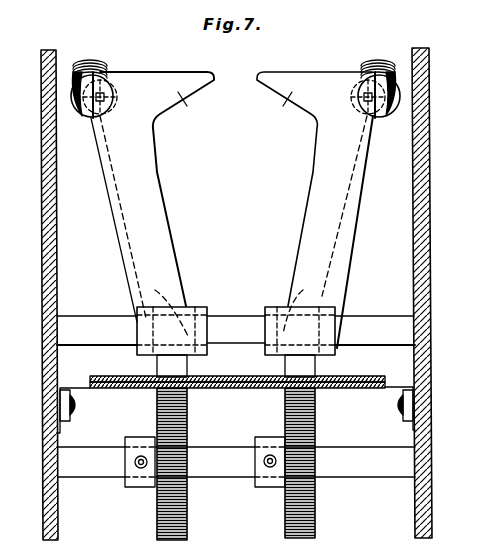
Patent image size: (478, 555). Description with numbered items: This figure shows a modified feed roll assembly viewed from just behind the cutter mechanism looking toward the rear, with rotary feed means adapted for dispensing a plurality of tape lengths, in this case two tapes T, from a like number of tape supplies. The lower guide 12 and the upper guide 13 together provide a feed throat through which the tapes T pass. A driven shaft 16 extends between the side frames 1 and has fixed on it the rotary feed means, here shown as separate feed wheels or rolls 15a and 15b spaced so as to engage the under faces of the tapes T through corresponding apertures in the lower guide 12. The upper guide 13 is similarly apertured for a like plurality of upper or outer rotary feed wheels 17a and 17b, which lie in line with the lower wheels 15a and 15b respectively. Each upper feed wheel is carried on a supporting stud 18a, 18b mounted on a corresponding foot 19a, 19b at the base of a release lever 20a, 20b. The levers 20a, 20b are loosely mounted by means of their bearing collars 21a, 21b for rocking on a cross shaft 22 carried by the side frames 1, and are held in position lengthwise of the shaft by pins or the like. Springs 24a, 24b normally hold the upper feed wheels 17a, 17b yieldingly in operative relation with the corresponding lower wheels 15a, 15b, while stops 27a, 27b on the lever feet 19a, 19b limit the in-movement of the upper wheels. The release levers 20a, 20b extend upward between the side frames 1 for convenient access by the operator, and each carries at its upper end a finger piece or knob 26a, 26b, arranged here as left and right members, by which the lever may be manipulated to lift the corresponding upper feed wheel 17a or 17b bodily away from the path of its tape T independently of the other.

The side frames 1 is at (42, 180).
The lower guide 12 is at (237, 388).
The upper guide 13 is at (229, 377).
The feed wheel 15a is at (166, 520).
The feed wheel 15b is at (316, 500).
The driven shaft 16 is at (228, 465).
The upper feed wheel 17a is at (167, 365).
The upper feed wheel 17b is at (305, 365).
The supporting stud 18a is at (170, 305).
The supporting stud 18b is at (310, 294).
The foot 19a is at (148, 306).
The foot 19b is at (330, 300).
The release lever 20a is at (153, 223).
The release lever 20b is at (313, 212).
The bearing collar 21a is at (197, 306).
The bearing collar 21b is at (268, 306).
The cross shaft 22 is at (234, 318).
The spring 24a is at (93, 70).
The spring 24b is at (373, 70).
The finger piece 26a is at (189, 109).
The finger piece 26b is at (277, 109).
The stop 27a is at (121, 345).
The stop 27b is at (340, 345).
The tape T is at (150, 391).